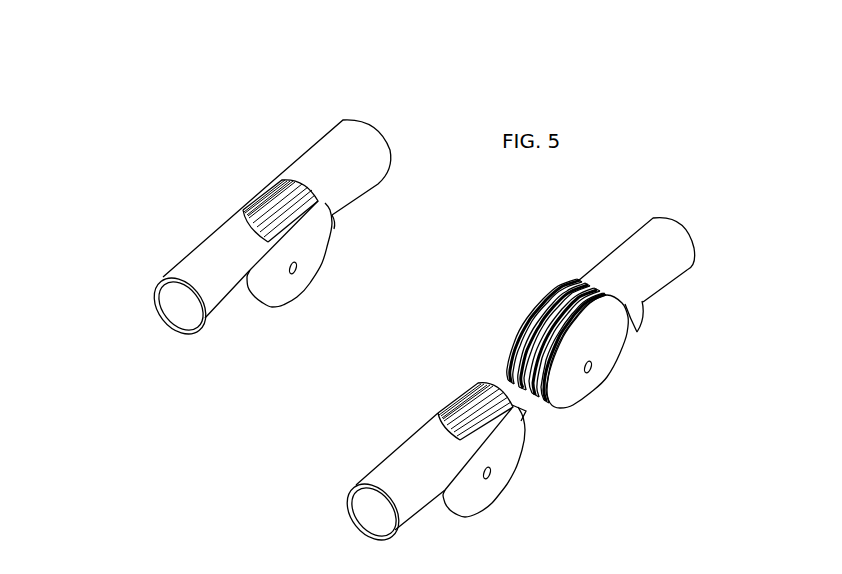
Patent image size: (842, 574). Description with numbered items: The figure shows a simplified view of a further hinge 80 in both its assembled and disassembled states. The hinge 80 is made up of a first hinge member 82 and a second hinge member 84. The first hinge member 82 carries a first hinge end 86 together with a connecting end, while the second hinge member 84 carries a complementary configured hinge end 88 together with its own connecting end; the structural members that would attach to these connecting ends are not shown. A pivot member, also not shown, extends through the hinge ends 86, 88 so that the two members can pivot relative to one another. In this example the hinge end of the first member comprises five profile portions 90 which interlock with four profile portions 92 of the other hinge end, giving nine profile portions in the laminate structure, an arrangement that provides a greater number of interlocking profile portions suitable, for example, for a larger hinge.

The hinge 80 is at (221, 184).
The first hinge member 82 is at (110, 207).
The second hinge member 84 is at (317, 75).
The first hinge end 86 is at (448, 432).
The complementary configured hinge end 88 is at (605, 313).
The profile portions 90 is at (508, 400).
The grooves 92 is at (560, 302).